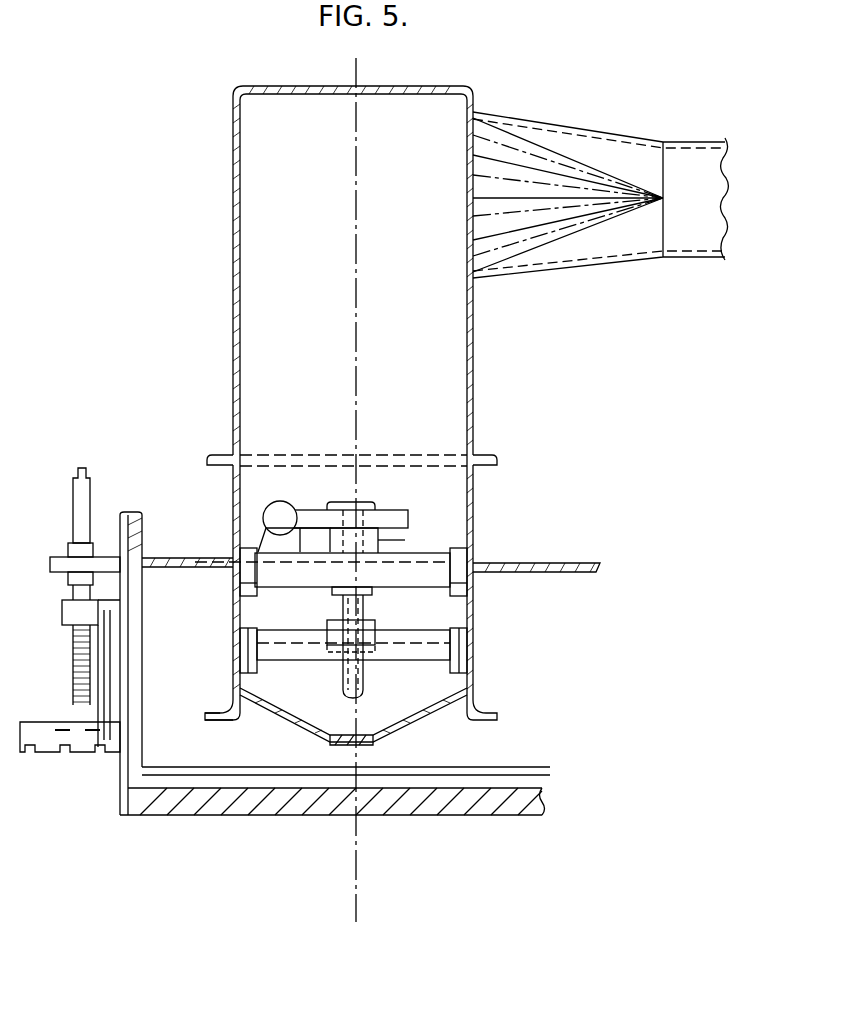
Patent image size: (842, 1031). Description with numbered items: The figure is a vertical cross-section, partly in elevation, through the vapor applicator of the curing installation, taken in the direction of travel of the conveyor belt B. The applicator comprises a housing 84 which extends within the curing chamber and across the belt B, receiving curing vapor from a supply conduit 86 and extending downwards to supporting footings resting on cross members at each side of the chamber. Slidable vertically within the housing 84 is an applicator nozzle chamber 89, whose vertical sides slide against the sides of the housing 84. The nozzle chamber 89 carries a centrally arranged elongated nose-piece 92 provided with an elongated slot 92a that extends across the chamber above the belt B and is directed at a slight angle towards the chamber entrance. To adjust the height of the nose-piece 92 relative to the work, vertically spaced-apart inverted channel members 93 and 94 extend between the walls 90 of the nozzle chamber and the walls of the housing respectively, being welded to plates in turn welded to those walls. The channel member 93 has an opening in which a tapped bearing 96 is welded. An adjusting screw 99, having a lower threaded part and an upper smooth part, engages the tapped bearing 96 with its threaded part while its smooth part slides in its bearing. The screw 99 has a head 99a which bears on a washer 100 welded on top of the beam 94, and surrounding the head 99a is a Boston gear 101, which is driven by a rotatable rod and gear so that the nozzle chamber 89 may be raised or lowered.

The housing 84 is at (470, 494).
The supply conduit 86 is at (550, 123).
The applicator nozzle chamber 89 is at (462, 712).
The walls of the nozzle chamber 90 is at (240, 652).
The nose-piece 92 is at (377, 737).
The elongated slot 92a is at (356, 740).
The channel member 93 is at (440, 634).
The channel member 94 is at (430, 562).
The tapped bearing 96 is at (368, 627).
The adjusting screw 99 is at (344, 619).
The head 99a is at (418, 531).
The washer 100 is at (380, 553).
The Boston gear 101 is at (313, 510).
The conveyor belt B is at (460, 806).